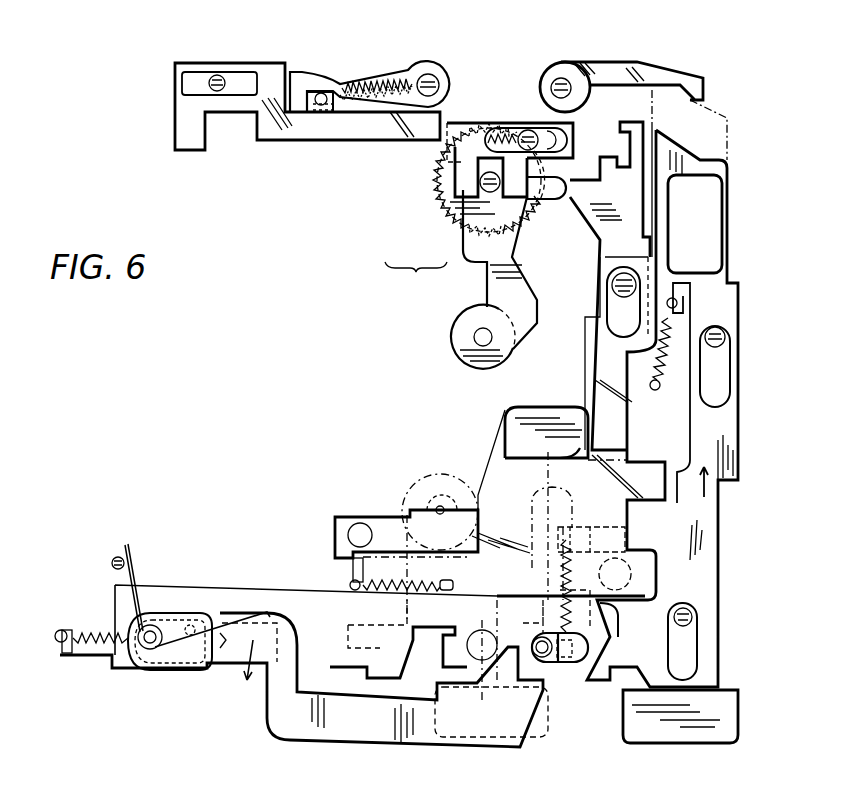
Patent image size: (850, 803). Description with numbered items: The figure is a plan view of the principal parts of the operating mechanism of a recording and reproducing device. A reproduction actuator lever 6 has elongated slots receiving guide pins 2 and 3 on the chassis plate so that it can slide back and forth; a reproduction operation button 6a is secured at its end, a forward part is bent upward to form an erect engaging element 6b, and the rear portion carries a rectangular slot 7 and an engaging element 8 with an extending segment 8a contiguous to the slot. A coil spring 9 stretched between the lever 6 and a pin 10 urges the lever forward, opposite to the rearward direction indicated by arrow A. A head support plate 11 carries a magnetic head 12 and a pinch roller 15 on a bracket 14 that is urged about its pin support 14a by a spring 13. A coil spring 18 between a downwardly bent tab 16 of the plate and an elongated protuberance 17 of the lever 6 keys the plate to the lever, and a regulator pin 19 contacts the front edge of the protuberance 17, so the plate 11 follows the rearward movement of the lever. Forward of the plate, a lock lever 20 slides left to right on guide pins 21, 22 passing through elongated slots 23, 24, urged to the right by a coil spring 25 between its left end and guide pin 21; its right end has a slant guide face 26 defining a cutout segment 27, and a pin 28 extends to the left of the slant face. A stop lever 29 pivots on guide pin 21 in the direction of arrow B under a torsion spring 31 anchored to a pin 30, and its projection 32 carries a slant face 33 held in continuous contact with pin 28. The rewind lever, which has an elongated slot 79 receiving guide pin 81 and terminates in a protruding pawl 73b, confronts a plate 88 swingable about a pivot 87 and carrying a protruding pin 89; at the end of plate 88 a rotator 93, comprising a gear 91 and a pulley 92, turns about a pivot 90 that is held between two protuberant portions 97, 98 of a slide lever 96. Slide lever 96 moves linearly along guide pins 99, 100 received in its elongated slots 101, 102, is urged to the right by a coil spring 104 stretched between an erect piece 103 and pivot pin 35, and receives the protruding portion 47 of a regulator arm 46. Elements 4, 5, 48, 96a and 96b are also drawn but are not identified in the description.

The guide pin 2 is at (723, 333).
The guide pin 3 is at (686, 610).
The slot 4 is at (730, 363).
The slot 5 is at (694, 673).
The reproduction actuator lever 6 is at (710, 531).
The reproduction operation button 6a is at (745, 725).
The erect engaging element 6b is at (608, 690).
The rectangular slot 7 is at (718, 195).
The engaging element 8 is at (688, 160).
The extending segment 8a is at (652, 170).
The coil spring 9 is at (669, 333).
The pin 10 is at (660, 390).
The head support plate 11 is at (513, 486).
The magnetic head 12 is at (563, 490).
The spring 13 is at (437, 577).
The bracket 14 is at (377, 518).
The pin support 14a is at (362, 522).
The pinch roller 15 is at (445, 473).
The downwardly bent tab 16 is at (552, 630).
The elongated protuberance 17 is at (617, 528).
The coil spring 18 is at (560, 582).
The regulator pin 19 is at (625, 566).
The lock lever 20 is at (305, 600).
The guide pin 21 is at (153, 625).
The guide pin 22 is at (543, 657).
The elongated slot 23 is at (192, 626).
The elongated slot 24 is at (563, 660).
The coil spring 25 is at (96, 632).
The slant guide face 26 is at (604, 666).
The cutout segment 27 is at (620, 619).
The pin 28 is at (477, 630).
The stop lever 29 is at (383, 737).
The pin 30 is at (128, 560).
The torsion spring 31 is at (220, 663).
The projection 32 is at (490, 677).
The slant face 33 is at (460, 700).
The pivot pin 35 is at (428, 74).
The regulator arm 46 is at (402, 72).
The protruding portion 47 is at (298, 112).
The lever portion 48 is at (340, 82).
The protruding pawl 73b is at (632, 122).
The elongated slot 79 is at (610, 322).
The guide pin 81 is at (612, 295).
The pivot 87 is at (475, 343).
The swingable plate 88 is at (517, 298).
The protruding pin 89 is at (558, 202).
The pivot 90 is at (487, 192).
The gear 91 is at (460, 215).
The pulley 92 is at (445, 207).
The rotator 93 is at (416, 279).
The slide lever 96 is at (380, 132).
The bracket portion 96a is at (272, 135).
The bracket foot 96b is at (188, 150).
The protuberant portion 97 is at (440, 180).
The protuberant portion 98 is at (527, 200).
The guide pin 99 is at (215, 76).
The guide pin 100 is at (526, 130).
The elongated slot 101 is at (236, 78).
The elongated slot 102 is at (560, 140).
The erect piece 103 is at (323, 105).
The coil spring 104 is at (365, 80).
The arrow A is at (704, 488).
The arrow B is at (240, 674).